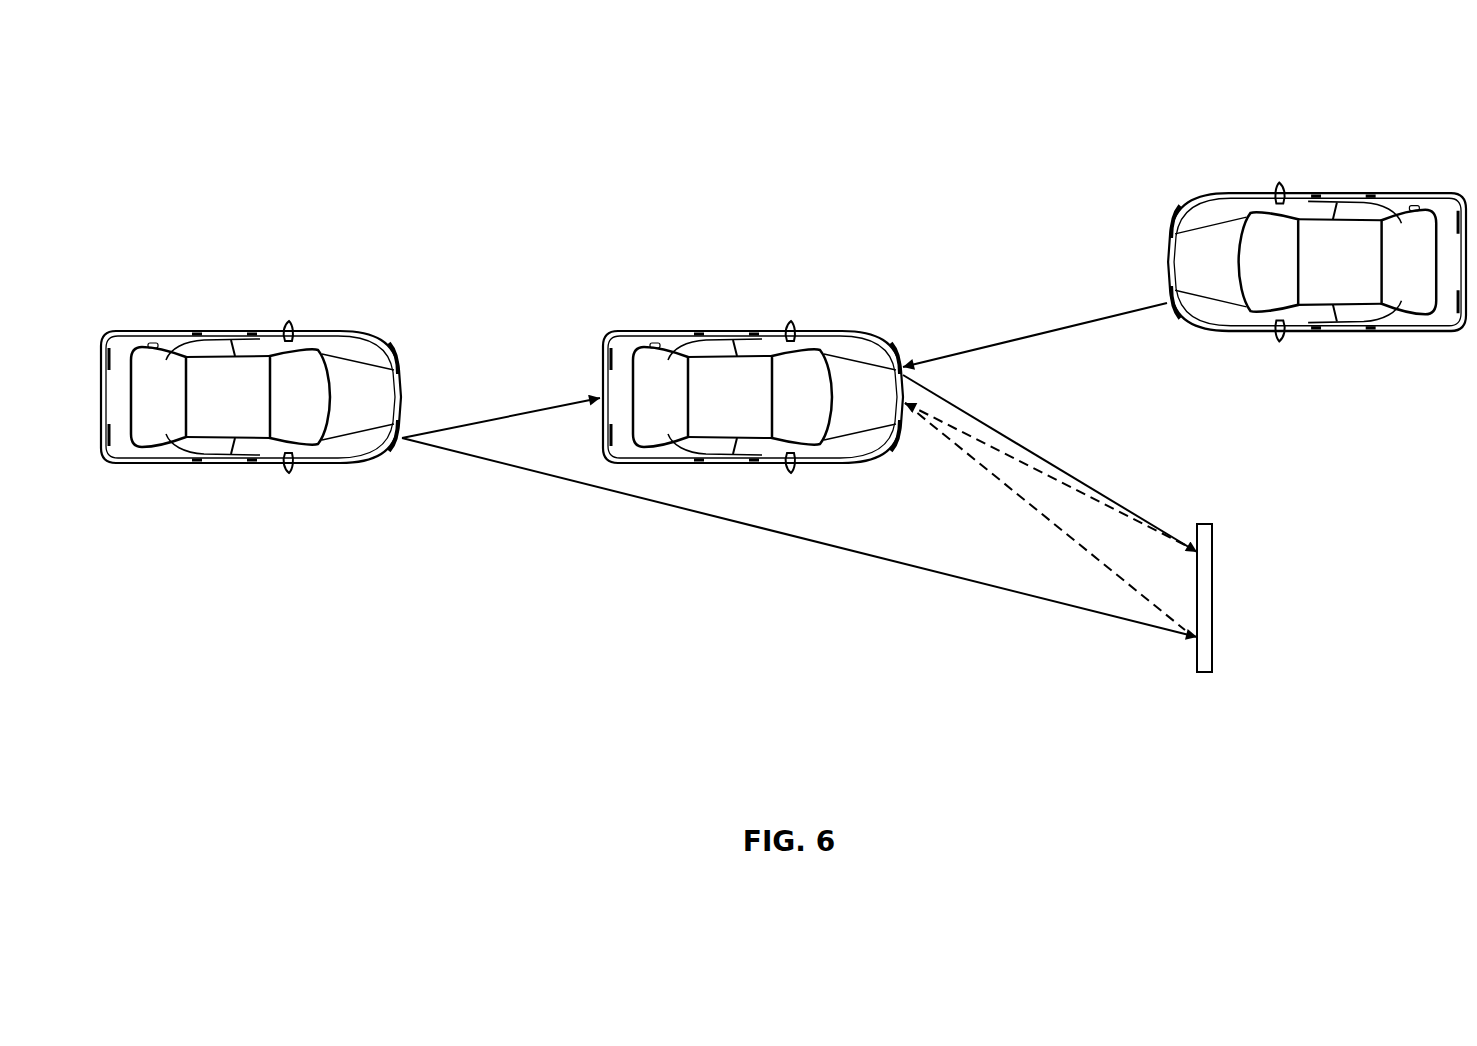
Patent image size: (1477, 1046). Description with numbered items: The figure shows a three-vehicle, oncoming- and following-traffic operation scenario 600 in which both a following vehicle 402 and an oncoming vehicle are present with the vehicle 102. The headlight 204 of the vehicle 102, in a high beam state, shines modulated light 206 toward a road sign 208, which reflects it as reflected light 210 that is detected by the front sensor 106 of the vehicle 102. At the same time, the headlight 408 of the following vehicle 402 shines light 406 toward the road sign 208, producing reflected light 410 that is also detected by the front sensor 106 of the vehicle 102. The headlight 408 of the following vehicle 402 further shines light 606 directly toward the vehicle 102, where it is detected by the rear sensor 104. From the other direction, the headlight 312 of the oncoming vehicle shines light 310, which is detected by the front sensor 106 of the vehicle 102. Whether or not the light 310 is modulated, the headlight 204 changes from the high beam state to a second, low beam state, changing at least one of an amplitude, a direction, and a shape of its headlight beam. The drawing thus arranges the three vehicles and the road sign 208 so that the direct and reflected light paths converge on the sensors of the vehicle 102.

The three-vehicle, oncoming- and following-traffic operation scenario 600 is at (212, 104).
The vehicle 102 is at (806, 299).
The rear sensor 104 is at (795, 387).
The front sensor 106 is at (965, 403).
The headlight 204 is at (921, 333).
The modulated light 206 is at (988, 427).
The road sign 208 is at (1213, 597).
The reflected light 210 is at (1058, 483).
The light 310 is at (1070, 325).
The headlight 312 is at (1298, 275).
The following vehicle 402 is at (305, 299).
The light 406 is at (618, 491).
The headlight 408 is at (268, 387).
The reflected light 410 is at (1014, 494).
The light 606 is at (504, 415).